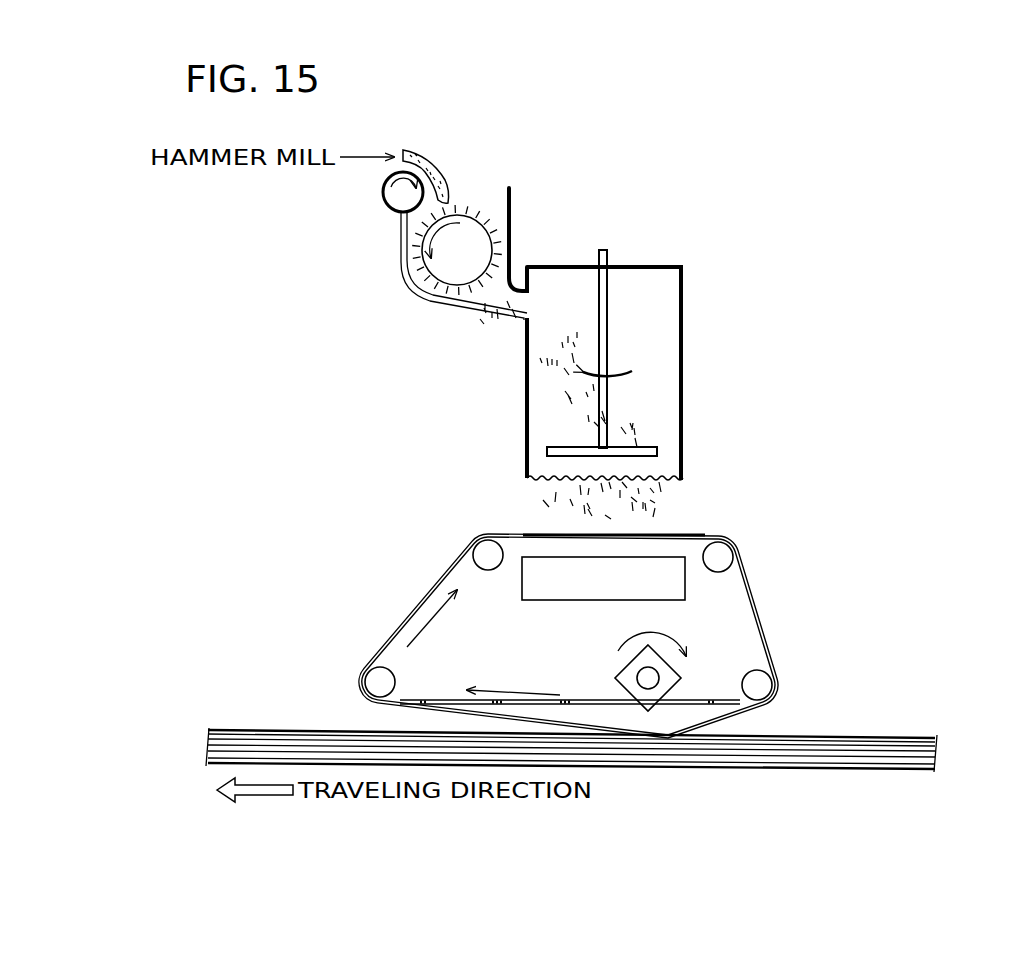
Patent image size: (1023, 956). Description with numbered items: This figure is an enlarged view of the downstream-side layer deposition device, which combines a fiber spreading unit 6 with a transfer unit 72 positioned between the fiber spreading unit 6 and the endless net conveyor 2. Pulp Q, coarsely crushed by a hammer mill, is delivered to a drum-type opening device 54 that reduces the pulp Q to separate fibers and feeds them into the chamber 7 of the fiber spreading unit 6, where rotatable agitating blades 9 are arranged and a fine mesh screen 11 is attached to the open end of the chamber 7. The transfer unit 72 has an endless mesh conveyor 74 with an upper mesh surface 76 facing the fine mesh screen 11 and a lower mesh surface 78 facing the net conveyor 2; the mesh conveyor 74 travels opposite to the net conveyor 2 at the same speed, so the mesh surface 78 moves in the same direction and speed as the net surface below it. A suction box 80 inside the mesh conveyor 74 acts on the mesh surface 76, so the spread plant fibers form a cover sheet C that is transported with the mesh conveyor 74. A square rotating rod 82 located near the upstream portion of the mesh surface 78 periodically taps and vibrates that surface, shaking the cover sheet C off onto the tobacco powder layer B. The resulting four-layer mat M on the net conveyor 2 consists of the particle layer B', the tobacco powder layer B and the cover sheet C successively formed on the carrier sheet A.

The pulp Q is at (424, 158).
The opening device 54 is at (464, 207).
The fiber spreading unit 6 is at (465, 344).
The chamber 7 is at (668, 335).
The agitating blades 9 is at (655, 452).
The fine mesh screen 11 is at (666, 481).
The mesh surface 76 is at (509, 538).
The mesh conveyor 74 is at (443, 578).
The transfer unit 72 is at (770, 592).
The mesh surface 78 is at (400, 706).
The cover sheet C is at (772, 637).
The suction box 80 is at (540, 601).
The rotating rod 82 is at (683, 673).
The four-layer mat M is at (550, 750).
The net conveyor 2 is at (687, 768).
The carrier sheet A is at (880, 761).
The tobacco powder layer B is at (899, 708).
The particle layer B' is at (960, 747).